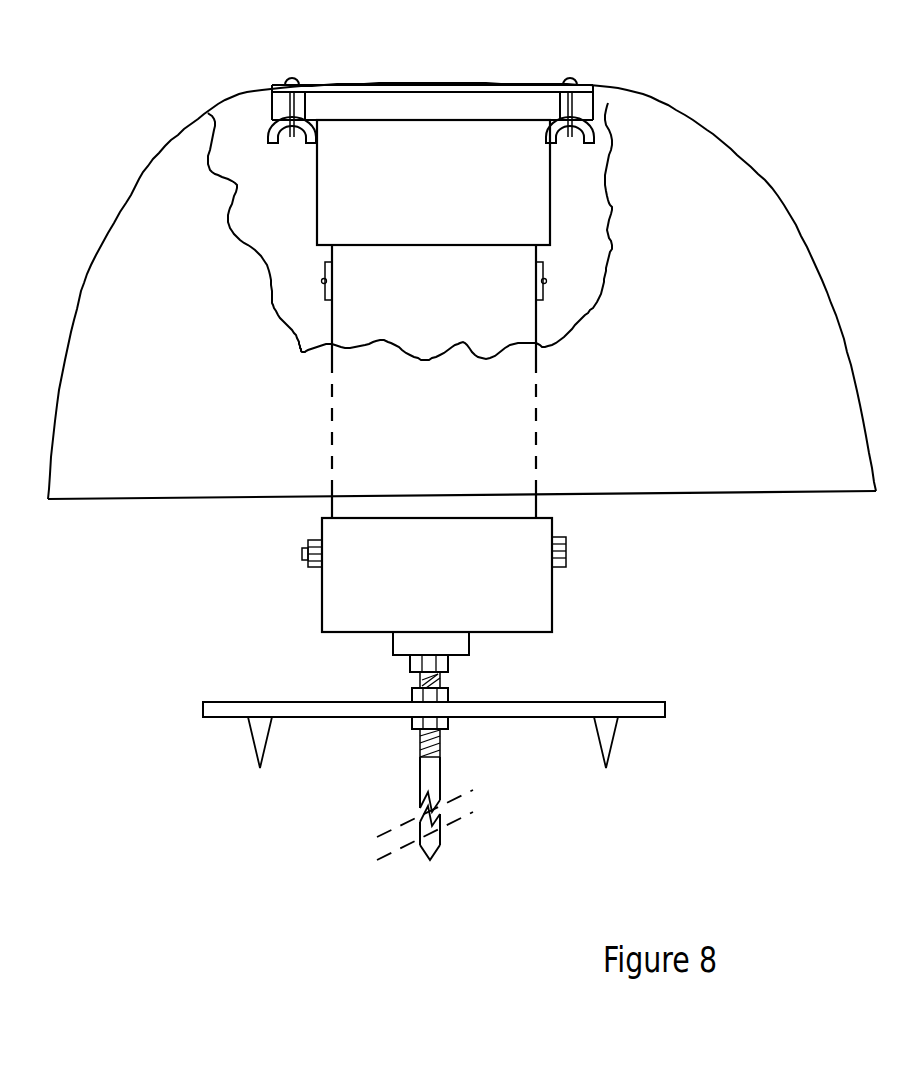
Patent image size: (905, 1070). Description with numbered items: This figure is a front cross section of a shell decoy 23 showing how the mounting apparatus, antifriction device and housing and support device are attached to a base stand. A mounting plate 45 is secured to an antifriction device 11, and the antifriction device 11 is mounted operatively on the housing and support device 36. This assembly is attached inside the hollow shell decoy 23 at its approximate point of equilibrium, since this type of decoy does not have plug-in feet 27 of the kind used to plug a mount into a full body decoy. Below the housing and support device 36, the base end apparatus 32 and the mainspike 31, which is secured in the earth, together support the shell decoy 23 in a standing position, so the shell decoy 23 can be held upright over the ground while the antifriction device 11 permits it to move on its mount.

The antifriction device 11 is at (517, 187).
The shell decoy 23 is at (155, 229).
The plug-in feet 27 is at (304, 96).
The mainspike 31 is at (448, 767).
The base end apparatus 32 is at (531, 577).
The housing and support device 36 is at (508, 400).
The mounting plate 45 is at (600, 102).